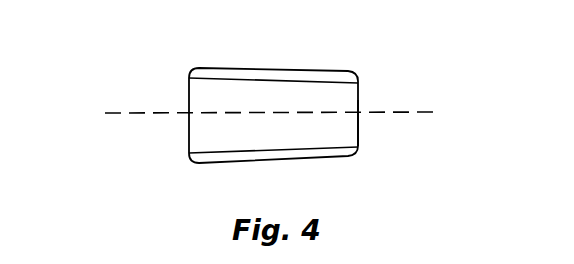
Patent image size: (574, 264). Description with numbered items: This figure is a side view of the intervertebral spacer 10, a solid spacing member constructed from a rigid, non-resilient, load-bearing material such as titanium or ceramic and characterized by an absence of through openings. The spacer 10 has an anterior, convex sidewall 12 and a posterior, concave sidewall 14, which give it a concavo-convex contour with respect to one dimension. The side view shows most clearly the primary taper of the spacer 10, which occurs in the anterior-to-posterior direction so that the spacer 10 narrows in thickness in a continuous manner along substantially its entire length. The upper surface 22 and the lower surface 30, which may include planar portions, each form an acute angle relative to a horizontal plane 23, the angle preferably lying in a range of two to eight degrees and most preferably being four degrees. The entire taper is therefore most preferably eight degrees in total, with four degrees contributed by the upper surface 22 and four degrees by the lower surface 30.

The intervertebral spacer 10 is at (305, 117).
The anterior convex sidewall 12 is at (189, 126).
The posterior concave sidewall 14 is at (367, 132).
The upper surface 22 is at (305, 70).
The horizontal plane 23 is at (120, 112).
The lower surface 30 is at (288, 160).